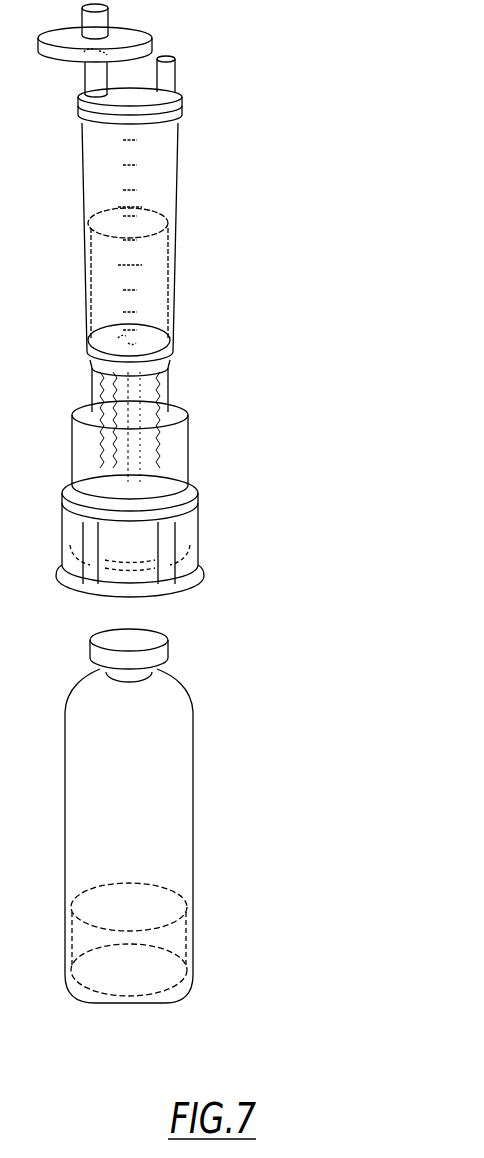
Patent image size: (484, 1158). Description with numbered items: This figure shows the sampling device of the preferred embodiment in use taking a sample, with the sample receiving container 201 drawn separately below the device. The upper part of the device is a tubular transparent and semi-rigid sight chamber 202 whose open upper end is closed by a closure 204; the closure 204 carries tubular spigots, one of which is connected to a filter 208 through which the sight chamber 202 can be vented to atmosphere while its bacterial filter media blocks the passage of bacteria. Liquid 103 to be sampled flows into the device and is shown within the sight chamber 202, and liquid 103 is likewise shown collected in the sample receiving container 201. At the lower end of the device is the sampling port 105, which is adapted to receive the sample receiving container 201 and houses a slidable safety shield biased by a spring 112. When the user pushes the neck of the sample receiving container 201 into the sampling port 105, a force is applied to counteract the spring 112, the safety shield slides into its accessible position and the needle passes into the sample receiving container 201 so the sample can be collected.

The sampling port 105 is at (237, 301).
The filter 208 is at (152, 43).
The closure 204 is at (182, 100).
The sight chamber 202 is at (177, 167).
The liquid 103 is at (160, 275).
The spring 112 is at (167, 405).
The sample receiving container 201 is at (218, 806).